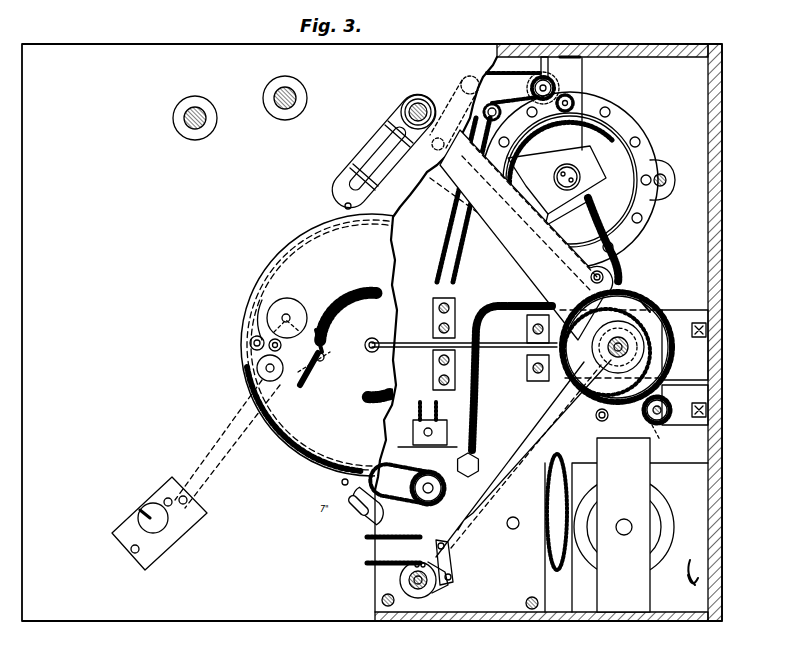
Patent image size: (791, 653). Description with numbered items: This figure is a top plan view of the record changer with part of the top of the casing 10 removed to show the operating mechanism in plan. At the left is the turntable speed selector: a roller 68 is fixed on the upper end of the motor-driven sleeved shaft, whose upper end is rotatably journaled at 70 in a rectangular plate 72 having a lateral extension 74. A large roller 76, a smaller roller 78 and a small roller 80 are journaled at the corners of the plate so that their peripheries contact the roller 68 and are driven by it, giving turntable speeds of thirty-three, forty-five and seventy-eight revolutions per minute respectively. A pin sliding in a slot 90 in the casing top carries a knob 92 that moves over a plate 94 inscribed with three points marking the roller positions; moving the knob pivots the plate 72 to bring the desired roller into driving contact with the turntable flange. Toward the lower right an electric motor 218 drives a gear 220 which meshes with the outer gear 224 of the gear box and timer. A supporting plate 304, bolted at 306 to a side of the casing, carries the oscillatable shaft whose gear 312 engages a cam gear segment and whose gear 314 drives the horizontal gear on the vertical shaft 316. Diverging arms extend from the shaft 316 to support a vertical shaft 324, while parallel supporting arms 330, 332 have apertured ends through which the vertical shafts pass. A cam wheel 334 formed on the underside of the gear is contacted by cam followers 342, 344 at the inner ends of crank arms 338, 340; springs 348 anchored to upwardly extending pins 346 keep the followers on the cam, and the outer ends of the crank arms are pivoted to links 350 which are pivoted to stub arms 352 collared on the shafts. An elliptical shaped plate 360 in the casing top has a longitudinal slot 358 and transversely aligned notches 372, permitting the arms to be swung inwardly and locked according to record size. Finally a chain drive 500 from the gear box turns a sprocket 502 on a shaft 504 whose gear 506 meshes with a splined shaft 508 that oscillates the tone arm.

The casing 10 is at (722, 506).
The roller 68 is at (300, 386).
The journal of the shaft upper end 70 is at (258, 366).
The rectangular plate 72 is at (262, 321).
The lateral extension 74 is at (334, 360).
The large roller 76 is at (290, 305).
The smaller roller 78 is at (262, 384).
The small roller 80 is at (250, 343).
The slot 90 is at (166, 498).
The knob 92 is at (147, 515).
The plate 94 is at (196, 512).
The electric motor 218 is at (628, 511).
The gear 220 is at (563, 547).
The outer gear 224 is at (550, 528).
The supporting plate 304 is at (706, 337).
The bolt 306 is at (705, 326).
The gear 312 is at (669, 426).
The gear 314 is at (672, 412).
The shaft 316 is at (608, 347).
The vertical shaft 324 is at (418, 592).
The supporting arm 330 is at (548, 455).
The supporting arm 332 is at (507, 249).
The cam wheel 334 is at (655, 316).
The crank arm 338 is at (585, 433).
The crank arm 340 is at (620, 280).
The cam follower 342 is at (690, 372).
The cam follower 344 is at (650, 306).
The pin 346 is at (572, 390).
The spring 348 is at (590, 279).
The link 350 is at (448, 566).
The stub arm 352 is at (442, 590).
The slot 358 is at (357, 182).
The elliptical shaped plate 360 is at (384, 124).
The notches 372 is at (436, 273).
The chain drive 500 is at (442, 236).
The sprocket 502 is at (566, 62).
The shaft 504 is at (544, 60).
The gear 506 is at (558, 85).
The splined shaft 508 is at (575, 100).